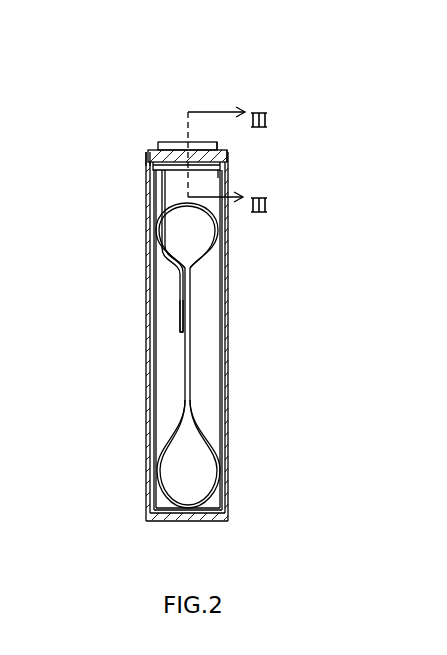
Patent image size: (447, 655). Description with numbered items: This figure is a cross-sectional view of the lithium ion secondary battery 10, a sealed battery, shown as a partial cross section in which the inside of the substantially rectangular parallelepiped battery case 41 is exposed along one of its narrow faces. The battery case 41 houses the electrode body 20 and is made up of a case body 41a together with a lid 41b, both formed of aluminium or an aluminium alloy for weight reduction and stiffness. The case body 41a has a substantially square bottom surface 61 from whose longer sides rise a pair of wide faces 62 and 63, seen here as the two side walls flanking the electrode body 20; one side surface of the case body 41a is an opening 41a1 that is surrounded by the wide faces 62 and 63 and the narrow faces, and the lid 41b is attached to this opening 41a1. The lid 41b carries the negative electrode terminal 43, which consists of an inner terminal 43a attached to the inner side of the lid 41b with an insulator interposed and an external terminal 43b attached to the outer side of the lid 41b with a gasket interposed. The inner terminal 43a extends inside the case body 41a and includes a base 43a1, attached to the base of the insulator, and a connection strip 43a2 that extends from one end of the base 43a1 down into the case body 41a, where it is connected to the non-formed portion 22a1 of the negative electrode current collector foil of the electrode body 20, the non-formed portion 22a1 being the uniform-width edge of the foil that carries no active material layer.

The lithium ion secondary battery 10 is at (296, 106).
The electrode body 20 is at (144, 432).
The non-formed portion 22a1 is at (195, 358).
The battery case 41 is at (126, 177).
The case body 41a is at (231, 232).
The opening 41a1 is at (149, 148).
The lid 41b is at (220, 151).
The negative electrode terminal 43 is at (170, 126).
The inner terminal 43a is at (166, 278).
The base 43a1 is at (217, 178).
The connection strip 43a2 is at (180, 308).
The external terminal 43b is at (146, 143).
The bottom surface 61 is at (187, 522).
The wide face 62 is at (146, 357).
The wide face 63 is at (229, 306).